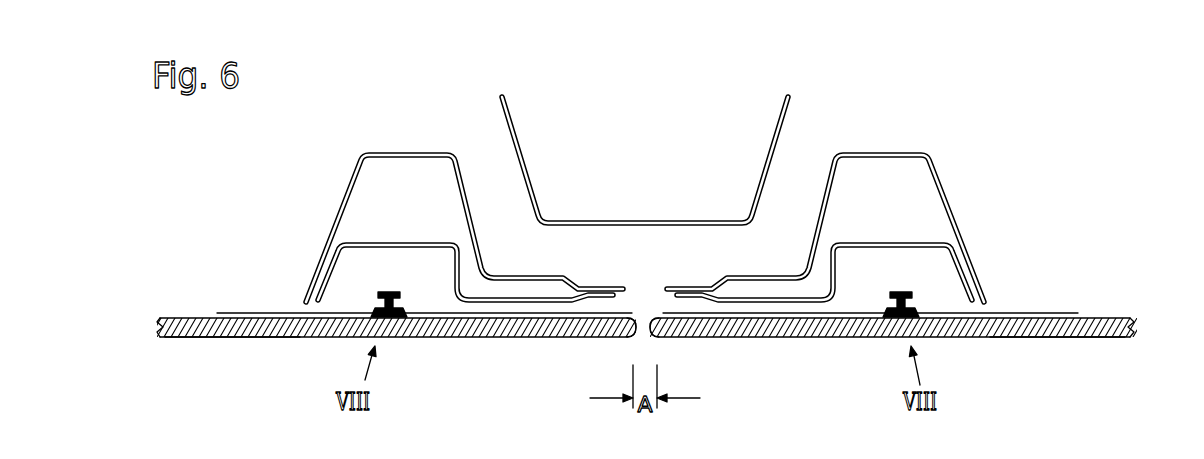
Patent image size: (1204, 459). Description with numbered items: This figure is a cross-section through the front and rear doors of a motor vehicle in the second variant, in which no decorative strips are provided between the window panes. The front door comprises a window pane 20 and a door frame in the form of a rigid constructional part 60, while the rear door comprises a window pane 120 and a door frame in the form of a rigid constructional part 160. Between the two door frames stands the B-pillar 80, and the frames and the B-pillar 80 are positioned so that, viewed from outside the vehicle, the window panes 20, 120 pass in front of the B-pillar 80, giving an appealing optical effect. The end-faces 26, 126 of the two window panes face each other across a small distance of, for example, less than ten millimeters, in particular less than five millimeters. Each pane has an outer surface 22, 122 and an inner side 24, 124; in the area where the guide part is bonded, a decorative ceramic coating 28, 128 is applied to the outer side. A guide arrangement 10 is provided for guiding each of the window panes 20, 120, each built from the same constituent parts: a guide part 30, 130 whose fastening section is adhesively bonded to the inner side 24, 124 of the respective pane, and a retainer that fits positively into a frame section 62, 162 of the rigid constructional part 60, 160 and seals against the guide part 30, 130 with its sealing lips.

The guide arrangement 10 is at (656, 207).
The window pane 20 is at (390, 324).
The outer surface 22 is at (233, 346).
The inner side 24 is at (199, 309).
The end-face 26 is at (638, 333).
The decorative ceramic coating 28 is at (176, 310).
The guide part 30 is at (400, 309).
The rigid constructional part 60 is at (342, 184).
The frame section 62 is at (388, 245).
The B-pillar 80 is at (688, 212).
The window pane 120 is at (897, 316).
The outer surface 122 is at (1071, 346).
The inner surface 124 is at (1094, 309).
The end-face 126 is at (652, 333).
The decorative coating 128 is at (1054, 310).
The guide part 130 is at (891, 308).
The rigid constructional part 160 is at (950, 178).
The frame section 162 is at (900, 245).